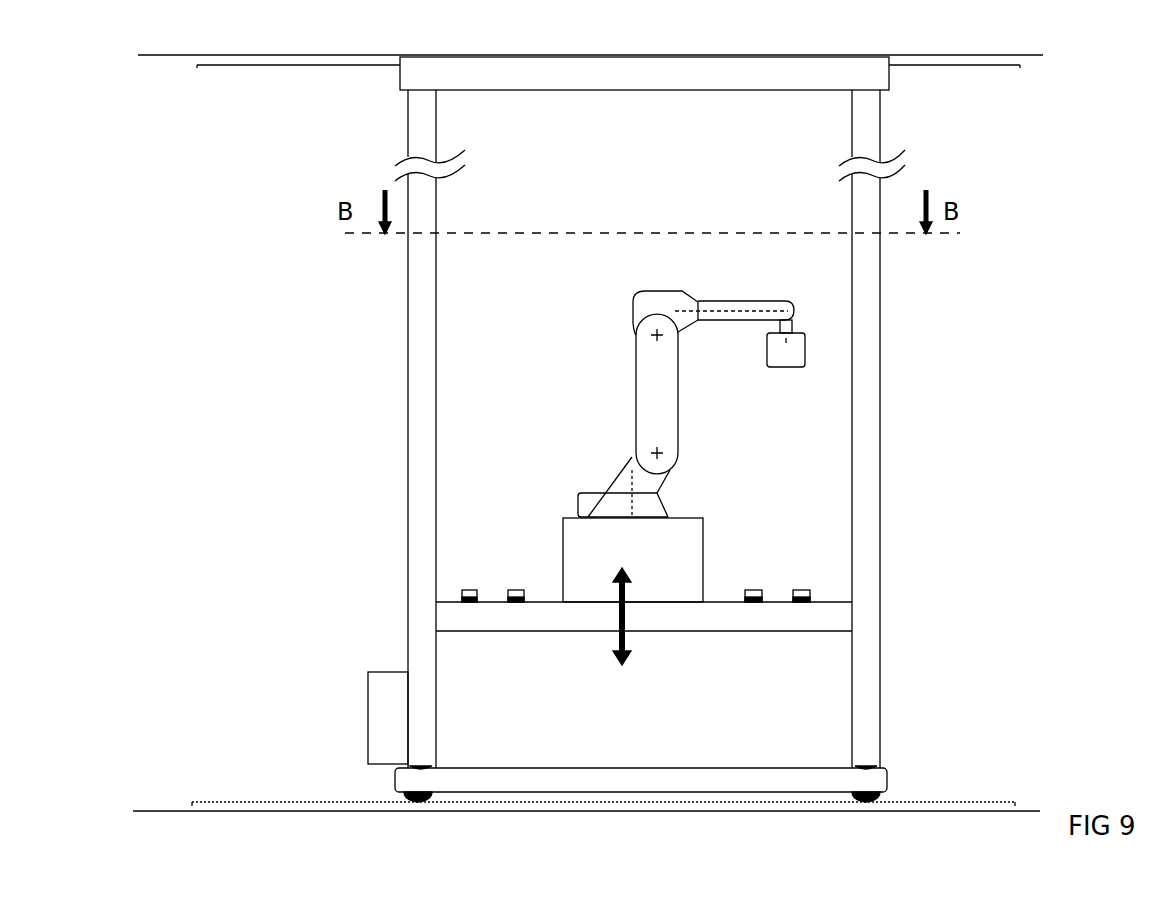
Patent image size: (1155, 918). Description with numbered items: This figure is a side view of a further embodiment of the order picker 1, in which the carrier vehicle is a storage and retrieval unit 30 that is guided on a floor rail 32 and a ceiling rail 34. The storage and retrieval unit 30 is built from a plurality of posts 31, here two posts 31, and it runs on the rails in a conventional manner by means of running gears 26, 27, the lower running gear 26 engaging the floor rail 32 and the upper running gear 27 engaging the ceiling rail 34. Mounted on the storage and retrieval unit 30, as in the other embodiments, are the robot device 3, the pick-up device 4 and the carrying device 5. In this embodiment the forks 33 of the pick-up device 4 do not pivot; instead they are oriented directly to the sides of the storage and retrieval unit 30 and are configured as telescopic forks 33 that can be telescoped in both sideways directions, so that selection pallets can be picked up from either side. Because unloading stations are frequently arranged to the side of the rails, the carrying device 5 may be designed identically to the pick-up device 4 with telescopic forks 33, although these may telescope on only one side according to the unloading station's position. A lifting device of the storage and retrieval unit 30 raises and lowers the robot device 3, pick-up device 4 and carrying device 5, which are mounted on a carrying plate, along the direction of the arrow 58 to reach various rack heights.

The order picker 1 is at (674, 381).
The robot device 3 is at (798, 302).
The pick-up device 4 is at (493, 593).
The carrying device 5 is at (777, 593).
The running gear 26 is at (887, 780).
The running gear 27 is at (400, 80).
The storage and retrieval unit 30 is at (678, 429).
The posts 31 is at (422, 373).
The floor rail 32 is at (1000, 800).
The telescopic forks 33 is at (675, 585).
The ceiling rail 34 is at (947, 70).
The arrow 58 is at (618, 628).